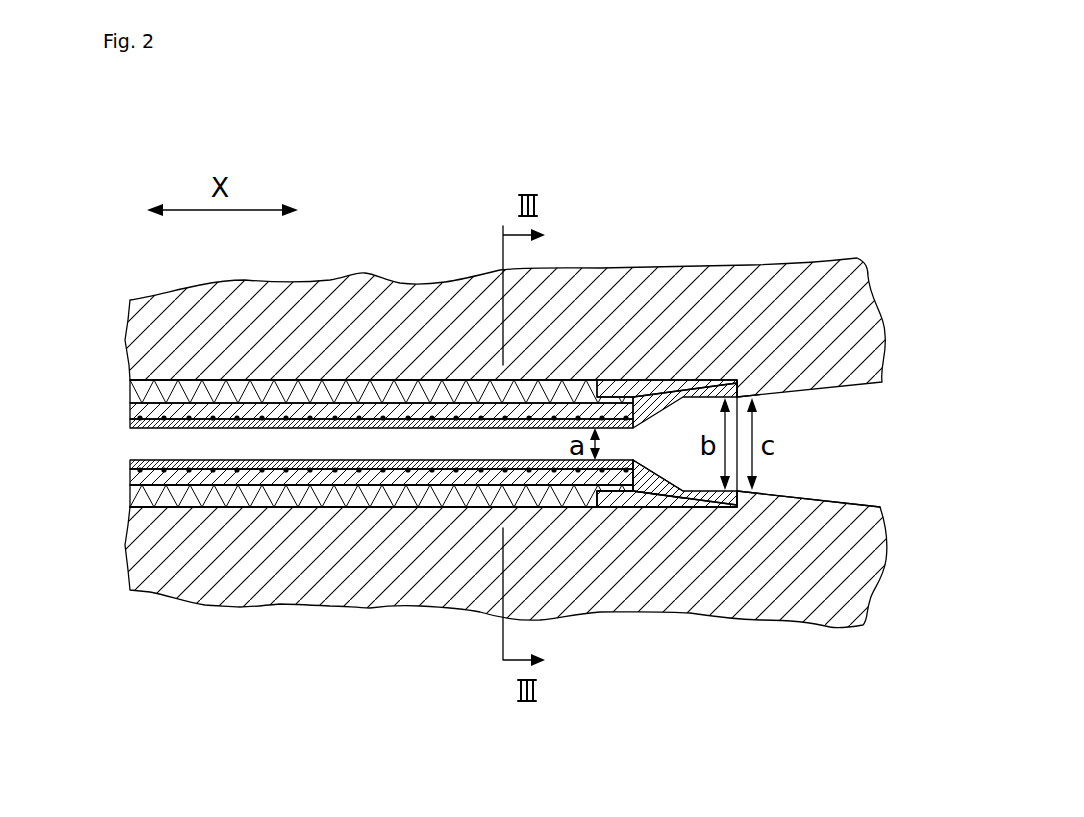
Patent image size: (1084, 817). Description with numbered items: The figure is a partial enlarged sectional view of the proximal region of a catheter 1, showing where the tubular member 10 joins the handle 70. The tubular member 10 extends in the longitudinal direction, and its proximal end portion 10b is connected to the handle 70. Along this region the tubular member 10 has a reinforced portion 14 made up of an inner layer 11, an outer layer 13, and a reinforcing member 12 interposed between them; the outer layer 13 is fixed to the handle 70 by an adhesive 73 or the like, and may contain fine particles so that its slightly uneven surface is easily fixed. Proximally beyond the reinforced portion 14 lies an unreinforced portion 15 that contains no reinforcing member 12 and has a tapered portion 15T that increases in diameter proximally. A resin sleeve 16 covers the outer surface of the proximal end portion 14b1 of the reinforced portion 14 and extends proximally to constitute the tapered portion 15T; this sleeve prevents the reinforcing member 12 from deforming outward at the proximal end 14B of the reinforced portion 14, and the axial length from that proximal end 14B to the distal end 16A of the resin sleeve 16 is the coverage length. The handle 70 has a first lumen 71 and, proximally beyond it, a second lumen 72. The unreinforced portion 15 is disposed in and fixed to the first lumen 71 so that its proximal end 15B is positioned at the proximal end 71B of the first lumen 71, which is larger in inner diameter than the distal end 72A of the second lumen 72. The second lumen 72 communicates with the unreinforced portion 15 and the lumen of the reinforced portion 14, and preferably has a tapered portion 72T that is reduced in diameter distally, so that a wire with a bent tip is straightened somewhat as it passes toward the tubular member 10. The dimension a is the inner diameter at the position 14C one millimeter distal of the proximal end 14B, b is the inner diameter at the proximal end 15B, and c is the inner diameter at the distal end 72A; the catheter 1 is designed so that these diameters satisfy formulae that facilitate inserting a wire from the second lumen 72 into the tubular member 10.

The catheter 1 is at (524, 108).
The tubular member 10 is at (203, 510).
The proximal end portion of the tubular member 10b is at (241, 487).
The inner layer 11 is at (130, 424).
The reinforcing member 12 is at (130, 411).
The outer layer 13 is at (130, 392).
The reinforced portion 14 is at (330, 488).
The proximal end of the reinforced portion 14B is at (655, 491).
The position apart by 1 mm distally from the proximal end of the reinforced portion 14C is at (600, 497).
The proximal end portion of the reinforced portion 14b1 is at (636, 481).
The unreinforced portion 15 is at (645, 388).
The proximal end of the unreinforced portion 15B is at (738, 503).
The tapered portion of the unreinforced portion 15T is at (672, 488).
The resin sleeve 16 is at (647, 396).
The distal end of the resin sleeve 16A is at (618, 490).
The handle 70 is at (157, 293).
The first lumen 71 is at (583, 380).
The proximal end of the first lumen 71B is at (737, 395).
The second lumen 72 is at (860, 438).
The distal end of the second lumen 72A is at (740, 394).
The tapered portion of the second lumen 72T is at (862, 505).
The adhesive 73 is at (130, 381).